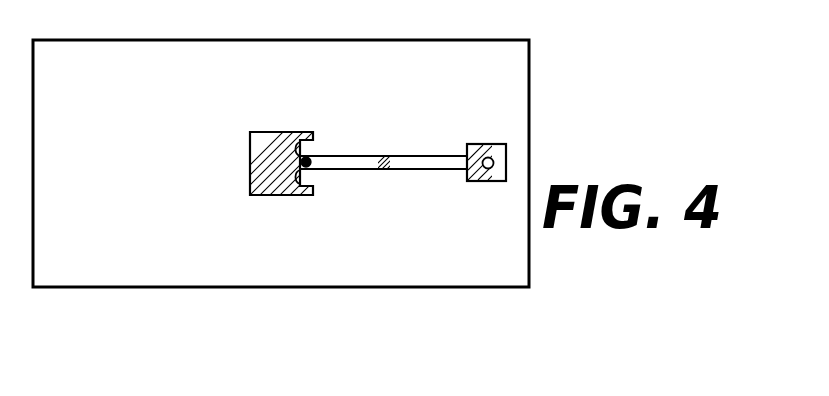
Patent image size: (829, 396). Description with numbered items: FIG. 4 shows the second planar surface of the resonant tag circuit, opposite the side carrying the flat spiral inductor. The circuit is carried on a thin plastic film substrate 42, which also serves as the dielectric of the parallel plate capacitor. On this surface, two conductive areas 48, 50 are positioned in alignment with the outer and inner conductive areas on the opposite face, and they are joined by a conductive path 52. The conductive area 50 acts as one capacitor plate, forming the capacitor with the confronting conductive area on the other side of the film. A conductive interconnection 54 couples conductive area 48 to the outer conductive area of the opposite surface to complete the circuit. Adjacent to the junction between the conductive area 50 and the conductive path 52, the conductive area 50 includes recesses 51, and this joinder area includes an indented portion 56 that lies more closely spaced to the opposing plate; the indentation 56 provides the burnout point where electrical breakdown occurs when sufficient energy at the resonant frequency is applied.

The thin plastic film substrate 42 is at (133, 173).
The conductive area 48 is at (492, 182).
The conductive area 50 is at (250, 167).
The recesses 51 is at (302, 148).
The conductive path 52 is at (389, 170).
The conductive interconnection 54 is at (489, 146).
The indented portion 56 is at (308, 157).